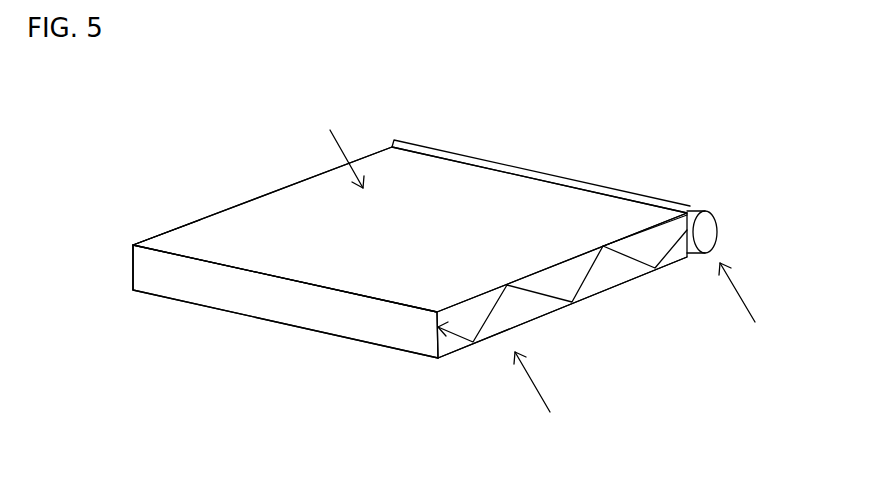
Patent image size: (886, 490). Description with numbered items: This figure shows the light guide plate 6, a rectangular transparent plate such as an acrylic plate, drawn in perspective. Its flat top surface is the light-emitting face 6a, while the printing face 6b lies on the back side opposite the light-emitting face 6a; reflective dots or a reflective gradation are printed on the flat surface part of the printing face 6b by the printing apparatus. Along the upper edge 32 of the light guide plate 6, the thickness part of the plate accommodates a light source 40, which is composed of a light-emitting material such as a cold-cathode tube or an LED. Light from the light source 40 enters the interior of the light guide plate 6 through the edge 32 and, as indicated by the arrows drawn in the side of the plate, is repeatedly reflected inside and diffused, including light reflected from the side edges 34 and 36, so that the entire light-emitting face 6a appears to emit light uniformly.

The light guide plate 6 is at (577, 212).
The light-emitting face 6a is at (263, 212).
The printing face 6b is at (562, 368).
The edge 32 is at (508, 168).
The edge 34 is at (297, 285).
The edge 36 is at (158, 232).
The light source 40 is at (717, 232).